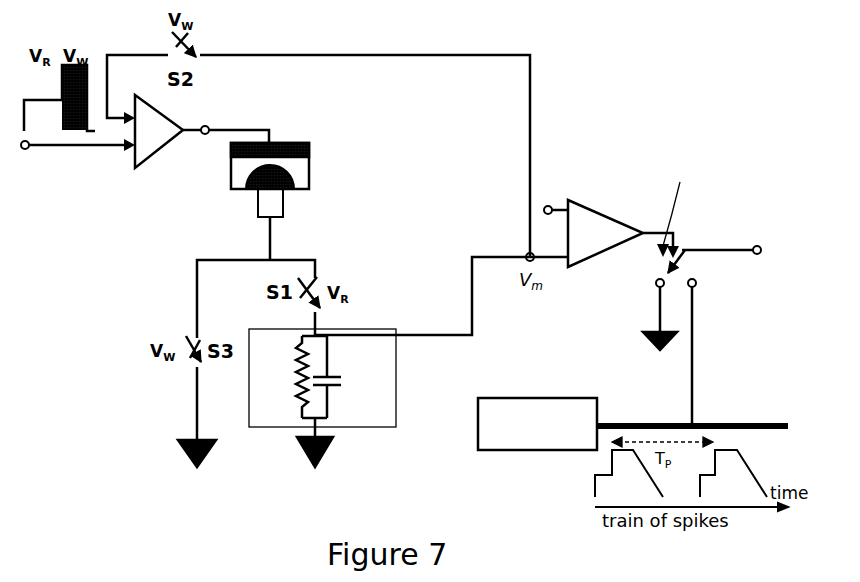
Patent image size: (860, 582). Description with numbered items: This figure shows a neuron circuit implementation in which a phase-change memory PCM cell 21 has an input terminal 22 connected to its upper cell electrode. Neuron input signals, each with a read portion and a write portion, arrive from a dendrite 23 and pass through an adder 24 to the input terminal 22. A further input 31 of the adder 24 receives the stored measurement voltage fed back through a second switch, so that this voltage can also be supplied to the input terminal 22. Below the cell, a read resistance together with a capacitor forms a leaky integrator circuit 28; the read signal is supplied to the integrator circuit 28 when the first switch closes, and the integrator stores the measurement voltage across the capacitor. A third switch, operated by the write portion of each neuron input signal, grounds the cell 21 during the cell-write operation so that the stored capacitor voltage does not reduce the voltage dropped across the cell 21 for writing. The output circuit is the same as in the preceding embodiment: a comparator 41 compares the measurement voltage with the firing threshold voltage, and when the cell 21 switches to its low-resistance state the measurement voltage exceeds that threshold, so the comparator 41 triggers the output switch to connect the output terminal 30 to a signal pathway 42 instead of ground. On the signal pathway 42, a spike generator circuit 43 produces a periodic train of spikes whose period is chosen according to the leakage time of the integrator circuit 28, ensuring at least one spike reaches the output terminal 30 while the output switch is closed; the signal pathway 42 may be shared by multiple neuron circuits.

The PCM cell 21 is at (309, 150).
The input terminal 22 is at (209, 127).
The dendrite 23 is at (116, 148).
The adder 24 is at (160, 152).
The integrator circuit 28 is at (377, 329).
The output terminal 30 is at (757, 245).
The further input 31 is at (120, 111).
The comparator 41 is at (582, 205).
The signal pathway 42 is at (750, 423).
The spike generator circuit 43 is at (540, 398).